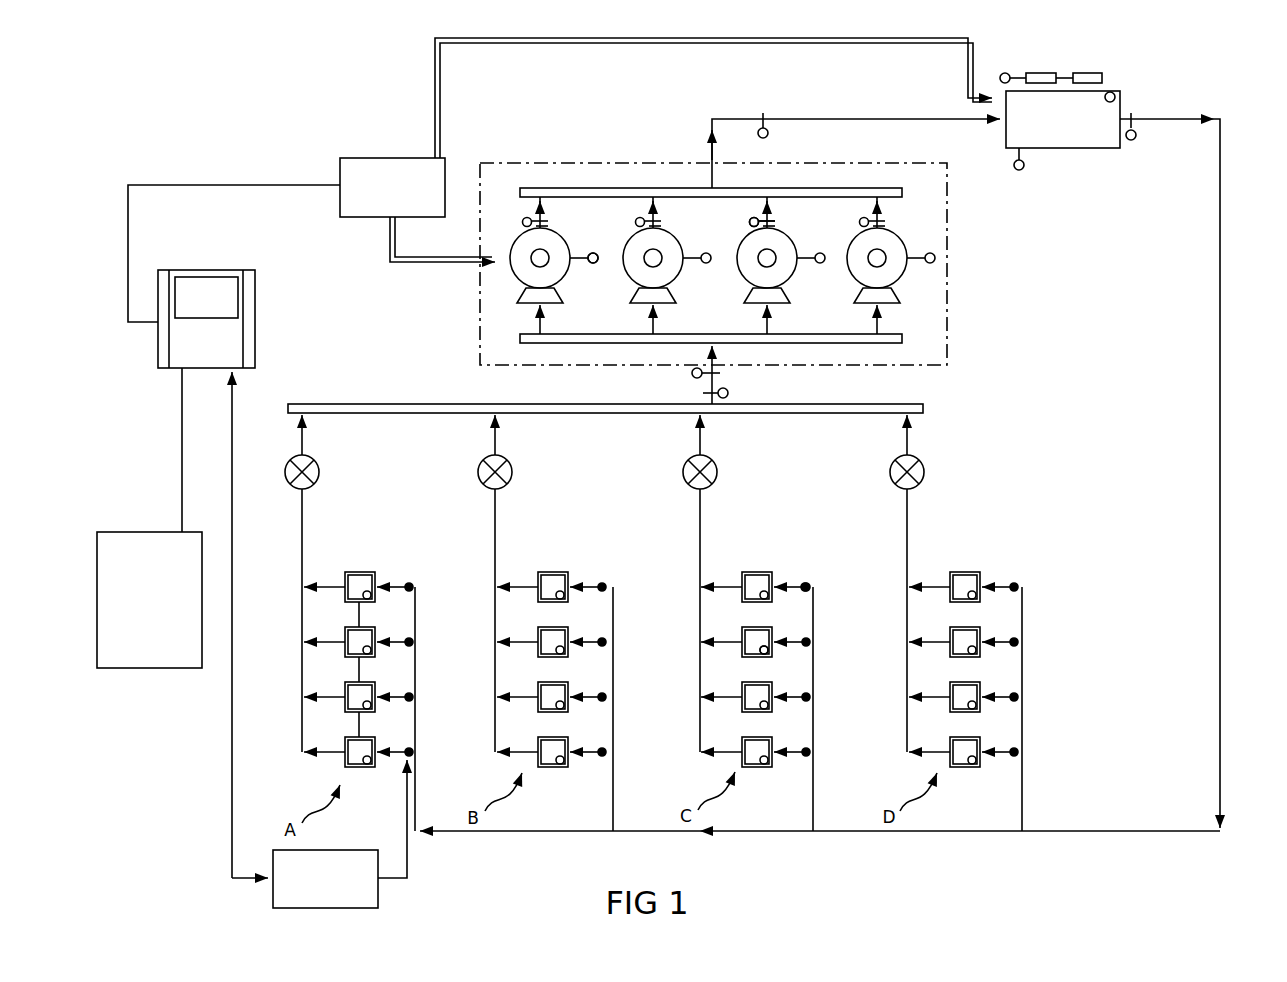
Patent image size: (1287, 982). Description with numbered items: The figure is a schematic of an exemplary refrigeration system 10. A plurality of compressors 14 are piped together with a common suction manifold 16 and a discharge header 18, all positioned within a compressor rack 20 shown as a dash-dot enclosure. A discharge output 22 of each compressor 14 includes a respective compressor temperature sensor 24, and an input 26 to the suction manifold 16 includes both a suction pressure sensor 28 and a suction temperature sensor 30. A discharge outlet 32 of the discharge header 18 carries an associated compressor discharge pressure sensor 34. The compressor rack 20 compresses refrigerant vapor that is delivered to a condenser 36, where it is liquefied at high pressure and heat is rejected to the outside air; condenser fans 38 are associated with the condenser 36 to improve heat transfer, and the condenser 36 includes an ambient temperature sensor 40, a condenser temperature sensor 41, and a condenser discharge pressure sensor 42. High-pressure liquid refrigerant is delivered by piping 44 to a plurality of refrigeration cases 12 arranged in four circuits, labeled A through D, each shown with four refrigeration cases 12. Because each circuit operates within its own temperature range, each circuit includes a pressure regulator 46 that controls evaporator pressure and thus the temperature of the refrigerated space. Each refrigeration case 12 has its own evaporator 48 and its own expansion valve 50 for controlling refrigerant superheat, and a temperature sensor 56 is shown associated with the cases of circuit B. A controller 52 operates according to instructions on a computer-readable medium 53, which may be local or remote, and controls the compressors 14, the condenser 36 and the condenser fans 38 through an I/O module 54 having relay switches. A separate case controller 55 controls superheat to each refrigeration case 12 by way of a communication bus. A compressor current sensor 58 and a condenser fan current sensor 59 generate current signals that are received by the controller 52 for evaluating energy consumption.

The refrigeration system 10 is at (1188, 66).
The refrigeration case 12 is at (373, 574).
The compressor 14 is at (905, 245).
The common suction manifold 16 is at (520, 338).
The discharge header 18 is at (595, 188).
The compressor rack 20 is at (947, 343).
The discharge output 22 is at (775, 222).
The compressor temperature sensor 24 is at (750, 222).
The input to the suction manifold 26 is at (712, 362).
The suction pressure sensor 28 is at (693, 377).
The suction temperature sensor 30 is at (728, 393).
The discharge outlet 32 is at (708, 135).
The compressor discharge pressure sensor 34 is at (768, 135).
The condenser 36 is at (1037, 148).
The condenser fans 38 is at (1086, 73).
The ambient temperature sensor 40 is at (1014, 166).
The condenser temperature sensor 41 is at (1113, 93).
The condenser discharge pressure sensor 42 is at (1131, 140).
The piping 44 is at (1220, 584).
The pressure regulator 46 is at (314, 484).
The evaporator 48 is at (768, 652).
The expansion valve 50 is at (807, 586).
The controller 52 is at (207, 272).
The computer-readable medium 53 is at (113, 531).
The I/O module 54 is at (385, 157).
The case controller 55 is at (378, 893).
The temperature sensor 56 is at (558, 602).
The compressor current sensor 58 is at (593, 265).
The condenser fan current sensor 59 is at (1003, 73).